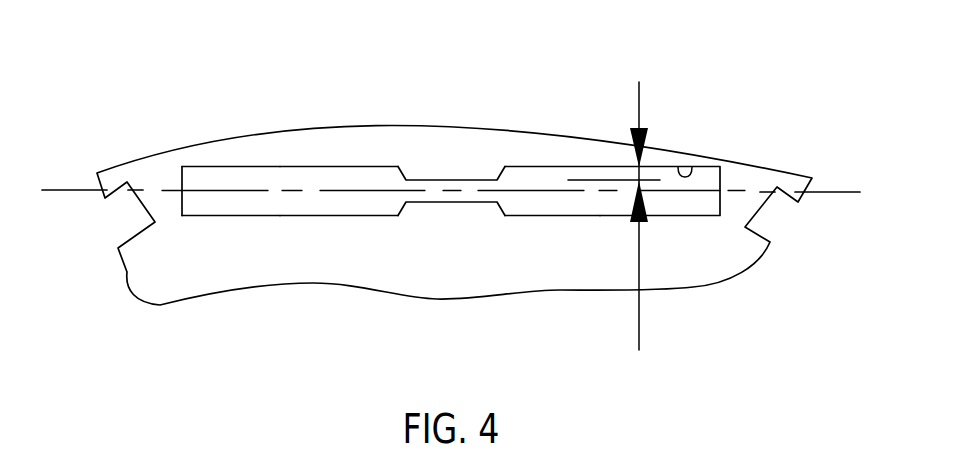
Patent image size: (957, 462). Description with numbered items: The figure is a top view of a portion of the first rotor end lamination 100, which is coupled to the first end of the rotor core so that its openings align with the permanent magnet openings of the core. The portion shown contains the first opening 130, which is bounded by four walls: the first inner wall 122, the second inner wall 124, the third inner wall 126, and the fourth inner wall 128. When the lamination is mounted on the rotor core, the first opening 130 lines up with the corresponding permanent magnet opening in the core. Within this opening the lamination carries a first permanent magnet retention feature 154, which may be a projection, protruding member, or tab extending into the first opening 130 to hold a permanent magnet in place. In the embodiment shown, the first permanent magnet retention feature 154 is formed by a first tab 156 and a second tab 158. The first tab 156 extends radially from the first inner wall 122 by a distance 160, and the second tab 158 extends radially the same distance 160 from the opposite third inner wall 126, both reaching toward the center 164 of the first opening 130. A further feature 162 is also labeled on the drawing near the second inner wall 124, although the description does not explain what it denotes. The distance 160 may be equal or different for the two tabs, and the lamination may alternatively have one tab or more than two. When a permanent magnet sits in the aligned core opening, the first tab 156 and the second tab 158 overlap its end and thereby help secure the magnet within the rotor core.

The first rotor end lamination 100 is at (122, 163).
The first inner wall 122 is at (310, 165).
The second inner wall 124 is at (721, 178).
The third inner wall 126 is at (557, 216).
The fourth inner wall 128 is at (182, 180).
The first opening 130 is at (252, 165).
The first permanent magnet retention feature 154 is at (484, 175).
The first tab 156 is at (403, 172).
The second tab 158 is at (400, 212).
The distance 160 is at (640, 330).
The groove in upper surface 162 is at (692, 168).
The center 164 is at (840, 192).